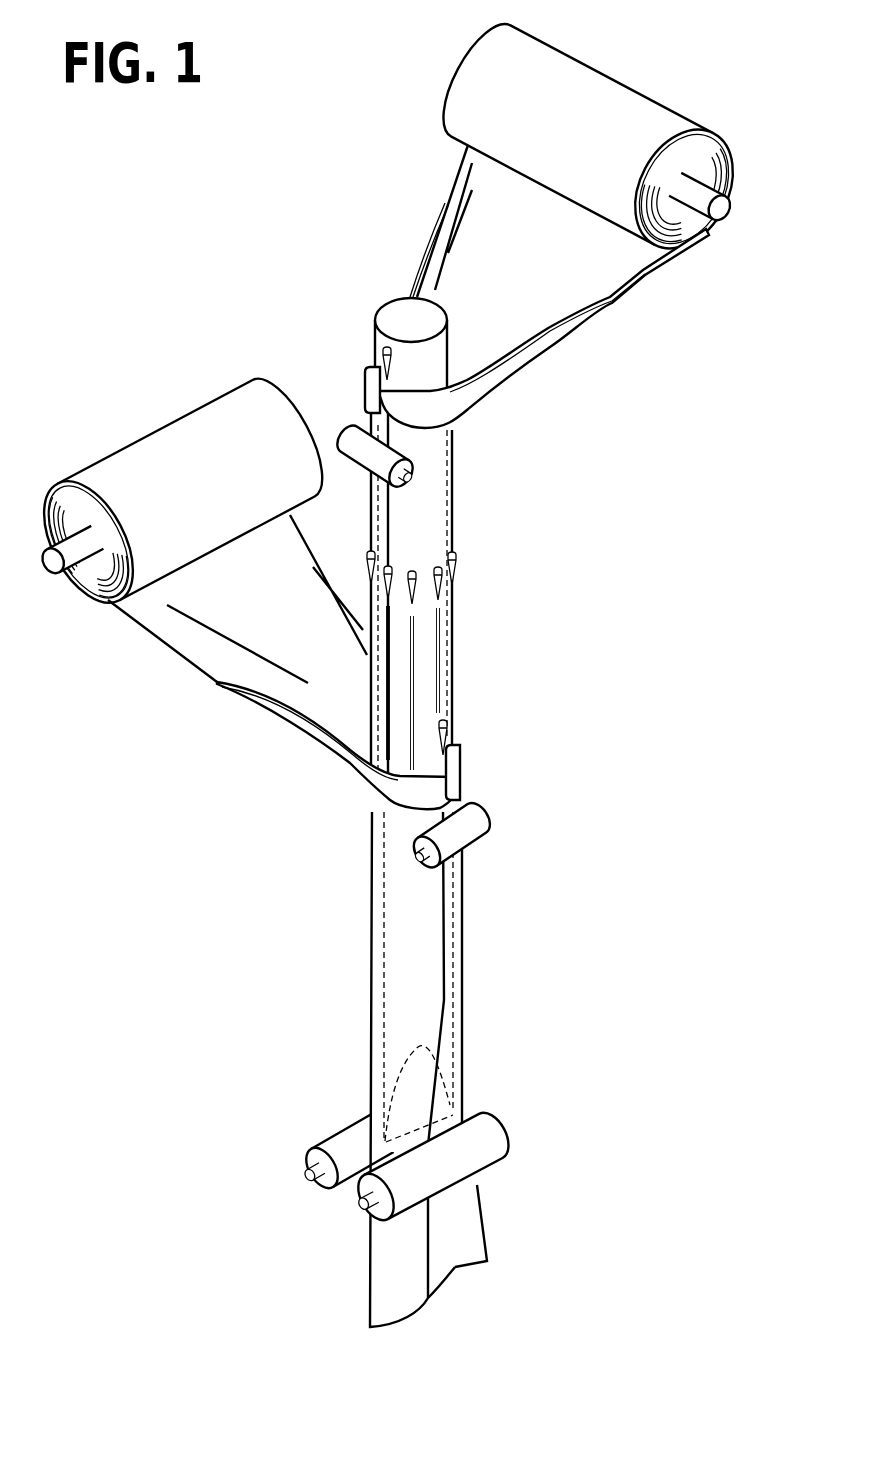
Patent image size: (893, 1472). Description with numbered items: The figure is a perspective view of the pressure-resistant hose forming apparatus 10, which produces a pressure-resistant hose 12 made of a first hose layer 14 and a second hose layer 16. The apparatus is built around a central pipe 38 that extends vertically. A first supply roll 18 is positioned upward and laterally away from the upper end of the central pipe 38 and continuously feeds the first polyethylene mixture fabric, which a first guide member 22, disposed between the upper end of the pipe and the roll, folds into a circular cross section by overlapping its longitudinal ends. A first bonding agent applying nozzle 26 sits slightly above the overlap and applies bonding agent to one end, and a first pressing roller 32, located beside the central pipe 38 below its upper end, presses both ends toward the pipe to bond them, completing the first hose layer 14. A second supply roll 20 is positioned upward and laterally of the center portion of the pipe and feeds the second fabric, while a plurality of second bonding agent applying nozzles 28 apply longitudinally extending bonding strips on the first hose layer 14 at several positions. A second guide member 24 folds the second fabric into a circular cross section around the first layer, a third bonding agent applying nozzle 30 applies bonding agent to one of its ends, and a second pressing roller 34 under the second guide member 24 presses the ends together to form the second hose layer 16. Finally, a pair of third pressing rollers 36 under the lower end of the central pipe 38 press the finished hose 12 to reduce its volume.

The pressure-resistant hose forming apparatus 10 is at (247, 285).
The pressure-resistant hose 12 is at (461, 1229).
The first hose layer 14 is at (443, 510).
The second hose layer 16 is at (377, 1069).
The first supply roll 18 is at (623, 95).
The second supply roll 20 is at (85, 594).
The first guide member 22 is at (503, 286).
The second guide member 24 is at (300, 713).
The first bonding agent applying nozzle 26 is at (370, 350).
The second bonding agent applying nozzles 28 is at (455, 585).
The third bonding agent applying nozzle 30 is at (450, 732).
The first pressing roller 32 is at (390, 457).
The second pressing roller 34 is at (460, 837).
The third pressing rollers 36 is at (377, 1069).
The central pipe 38 is at (393, 310).